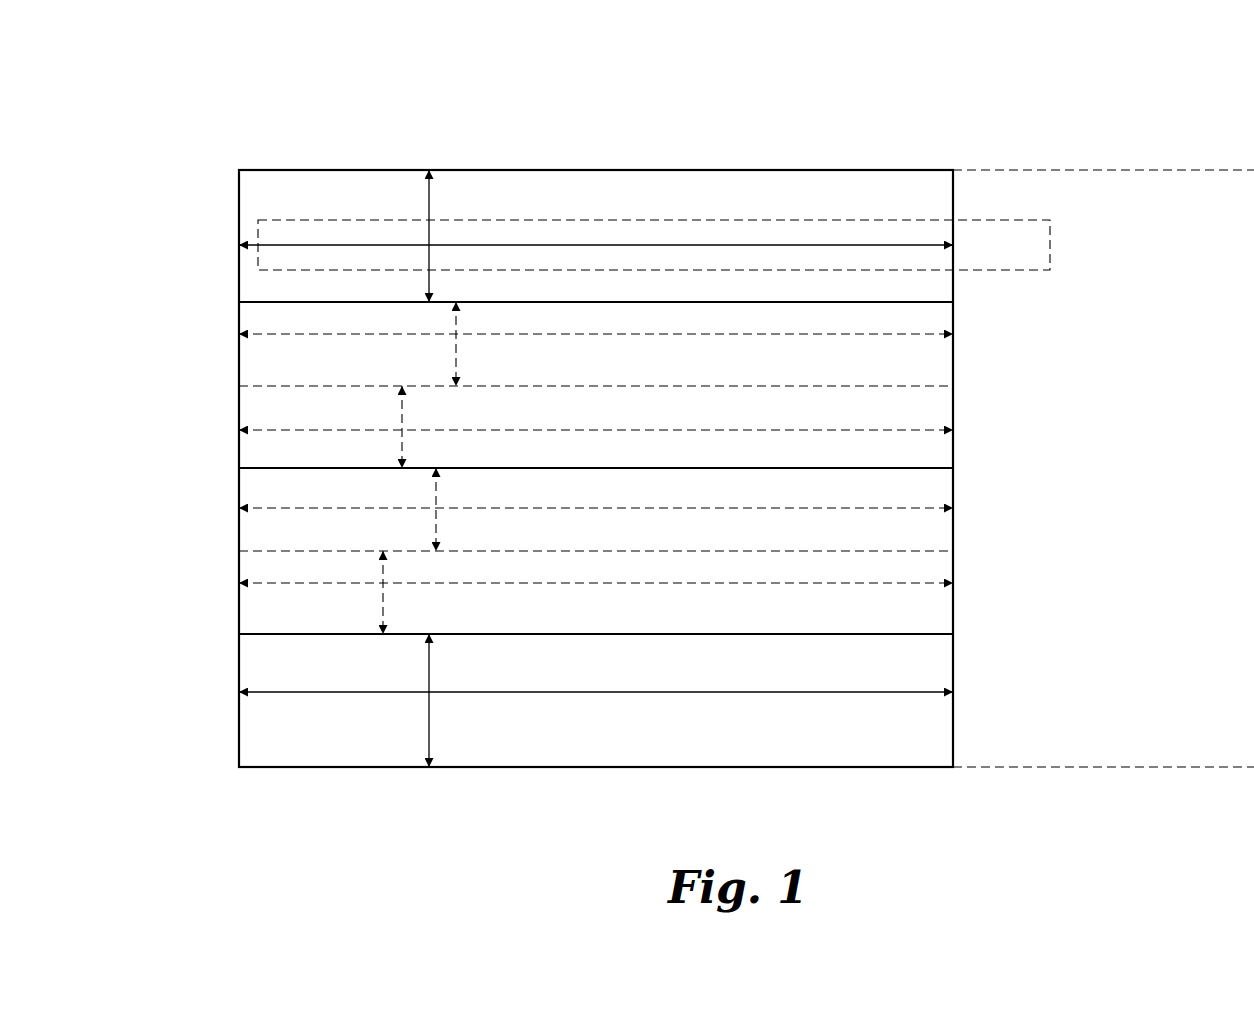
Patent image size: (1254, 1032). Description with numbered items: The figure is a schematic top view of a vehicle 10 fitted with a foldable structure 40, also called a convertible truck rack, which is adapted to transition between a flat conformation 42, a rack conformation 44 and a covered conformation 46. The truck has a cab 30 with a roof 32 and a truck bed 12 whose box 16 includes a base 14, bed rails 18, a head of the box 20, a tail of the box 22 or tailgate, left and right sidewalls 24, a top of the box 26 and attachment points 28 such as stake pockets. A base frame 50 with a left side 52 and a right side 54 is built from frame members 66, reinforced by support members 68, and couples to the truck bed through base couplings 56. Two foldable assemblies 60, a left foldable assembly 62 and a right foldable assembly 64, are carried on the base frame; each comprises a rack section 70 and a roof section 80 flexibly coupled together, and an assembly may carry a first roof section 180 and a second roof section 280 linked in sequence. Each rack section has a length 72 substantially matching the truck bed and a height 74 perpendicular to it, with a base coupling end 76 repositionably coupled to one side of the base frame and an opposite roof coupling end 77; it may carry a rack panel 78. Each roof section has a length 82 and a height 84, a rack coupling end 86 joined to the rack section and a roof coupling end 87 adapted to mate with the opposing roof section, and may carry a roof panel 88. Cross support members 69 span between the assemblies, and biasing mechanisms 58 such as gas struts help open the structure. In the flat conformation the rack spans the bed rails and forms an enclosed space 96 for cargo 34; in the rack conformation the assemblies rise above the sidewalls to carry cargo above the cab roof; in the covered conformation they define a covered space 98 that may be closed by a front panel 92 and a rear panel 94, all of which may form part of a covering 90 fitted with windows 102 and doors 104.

The vehicle 10 is at (1085, 85).
The truck bed 12 is at (838, 170).
The base of the truck bed 14 is at (923, 185).
The box of the truck bed 16 is at (875, 170).
The bed rails 18 is at (815, 170).
The head of the box 20 is at (953, 765).
The tail of the box 22 is at (240, 757).
The sidewalls of the box 24 is at (760, 170).
The top of the box 26 is at (698, 196).
The attachment points 28 is at (636, 170).
The cab 30 is at (983, 170).
The roof of the truck 32 is at (1040, 205).
The cargo 34 is at (1030, 270).
The foldable structure 40 is at (178, 118).
The flat conformation 42 is at (183, 150).
The rack conformation 44 is at (182, 178).
The covered conformation 46 is at (178, 199).
The base frame 50 is at (239, 742).
The left side of the base frame 52 is at (253, 170).
The right side of the base frame 54 is at (245, 768).
The base couplings 56 is at (583, 170).
The biasing mechanisms 58 is at (953, 200).
The foldable assemblies 60 is at (239, 300).
The left foldable assembly 62 is at (239, 318).
The right foldable assembly 64 is at (239, 628).
The frame members 66 is at (953, 730).
The support members 68 is at (920, 375).
The cross support members 69 is at (239, 655).
The rack section 70 is at (239, 196).
The length of the rack section 72 is at (325, 245).
The height of the rack section 74 is at (429, 200).
The base coupling end 76 is at (483, 172).
The roof coupling end of the rack section 77 is at (548, 302).
The rack panel 78 is at (273, 195).
The roof section 80 is at (239, 350).
The length of the roof section 82 is at (297, 336).
The height of the roof section 84 is at (456, 358).
The rack coupling end 86 is at (585, 303).
The roof coupling end of the roof section 87 is at (670, 385).
The roof panel 88 is at (239, 386).
The covering 90 is at (953, 415).
The front panel 92 is at (953, 445).
The rear panel 94 is at (239, 448).
The enclosed space 96 is at (930, 488).
The covered space 98 is at (932, 530).
The windows 102 is at (239, 462).
The doors 104 is at (239, 480).
The first roof section 180 is at (253, 362).
The second roof section 280 is at (239, 402).